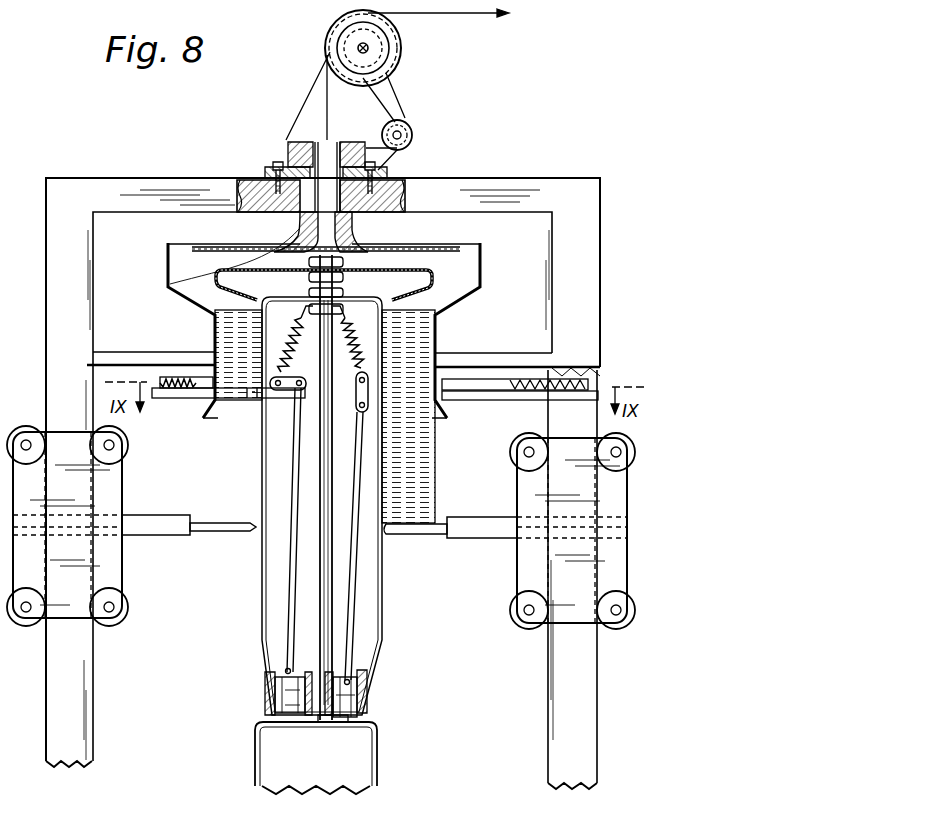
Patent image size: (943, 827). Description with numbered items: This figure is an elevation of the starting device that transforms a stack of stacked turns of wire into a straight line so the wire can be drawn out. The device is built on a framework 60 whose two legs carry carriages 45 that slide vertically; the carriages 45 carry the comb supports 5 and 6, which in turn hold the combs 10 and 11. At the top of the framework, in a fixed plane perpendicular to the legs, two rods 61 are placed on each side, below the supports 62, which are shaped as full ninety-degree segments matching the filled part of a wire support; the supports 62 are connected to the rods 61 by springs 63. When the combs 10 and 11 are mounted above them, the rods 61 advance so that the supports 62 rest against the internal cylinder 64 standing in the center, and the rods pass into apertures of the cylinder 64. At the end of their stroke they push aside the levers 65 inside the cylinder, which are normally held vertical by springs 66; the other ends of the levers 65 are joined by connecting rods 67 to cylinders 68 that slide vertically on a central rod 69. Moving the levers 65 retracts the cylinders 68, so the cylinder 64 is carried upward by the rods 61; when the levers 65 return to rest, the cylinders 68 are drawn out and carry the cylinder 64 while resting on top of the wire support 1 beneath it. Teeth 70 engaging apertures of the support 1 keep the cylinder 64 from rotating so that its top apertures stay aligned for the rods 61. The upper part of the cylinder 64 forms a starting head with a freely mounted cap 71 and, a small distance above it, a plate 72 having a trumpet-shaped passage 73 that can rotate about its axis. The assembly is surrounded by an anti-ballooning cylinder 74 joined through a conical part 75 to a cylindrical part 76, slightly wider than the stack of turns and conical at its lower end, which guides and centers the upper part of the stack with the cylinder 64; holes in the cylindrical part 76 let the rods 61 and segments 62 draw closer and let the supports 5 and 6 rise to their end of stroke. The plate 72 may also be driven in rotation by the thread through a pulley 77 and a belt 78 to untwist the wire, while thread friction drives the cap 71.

The wire support 1 is at (378, 771).
The comb support 5 is at (165, 536).
The comb support 6 is at (484, 539).
The comb 10 is at (220, 529).
The comb 11 is at (410, 535).
The carriage 45 is at (123, 568).
The framework 60 is at (46, 252).
The rod 61 is at (170, 399).
The support 62 is at (205, 378).
The spring 63 is at (176, 378).
The internal cylinder 64 is at (262, 463).
The lever 65 is at (362, 388).
The spring 66 is at (346, 342).
The connecting rod 67 is at (297, 507).
The cylinder 68 is at (283, 692).
The central rod 69 is at (320, 594).
The tooth 70 is at (353, 723).
The cap 71 is at (429, 285).
The plate 72 is at (449, 249).
The trumpet-shaped passage 73 is at (364, 241).
The anti-ballooning cylinder 74 is at (476, 292).
The conical part 75 is at (458, 299).
The cylindrical part 76 is at (436, 333).
The pulley 77 is at (401, 50).
The belt 78 is at (409, 116).